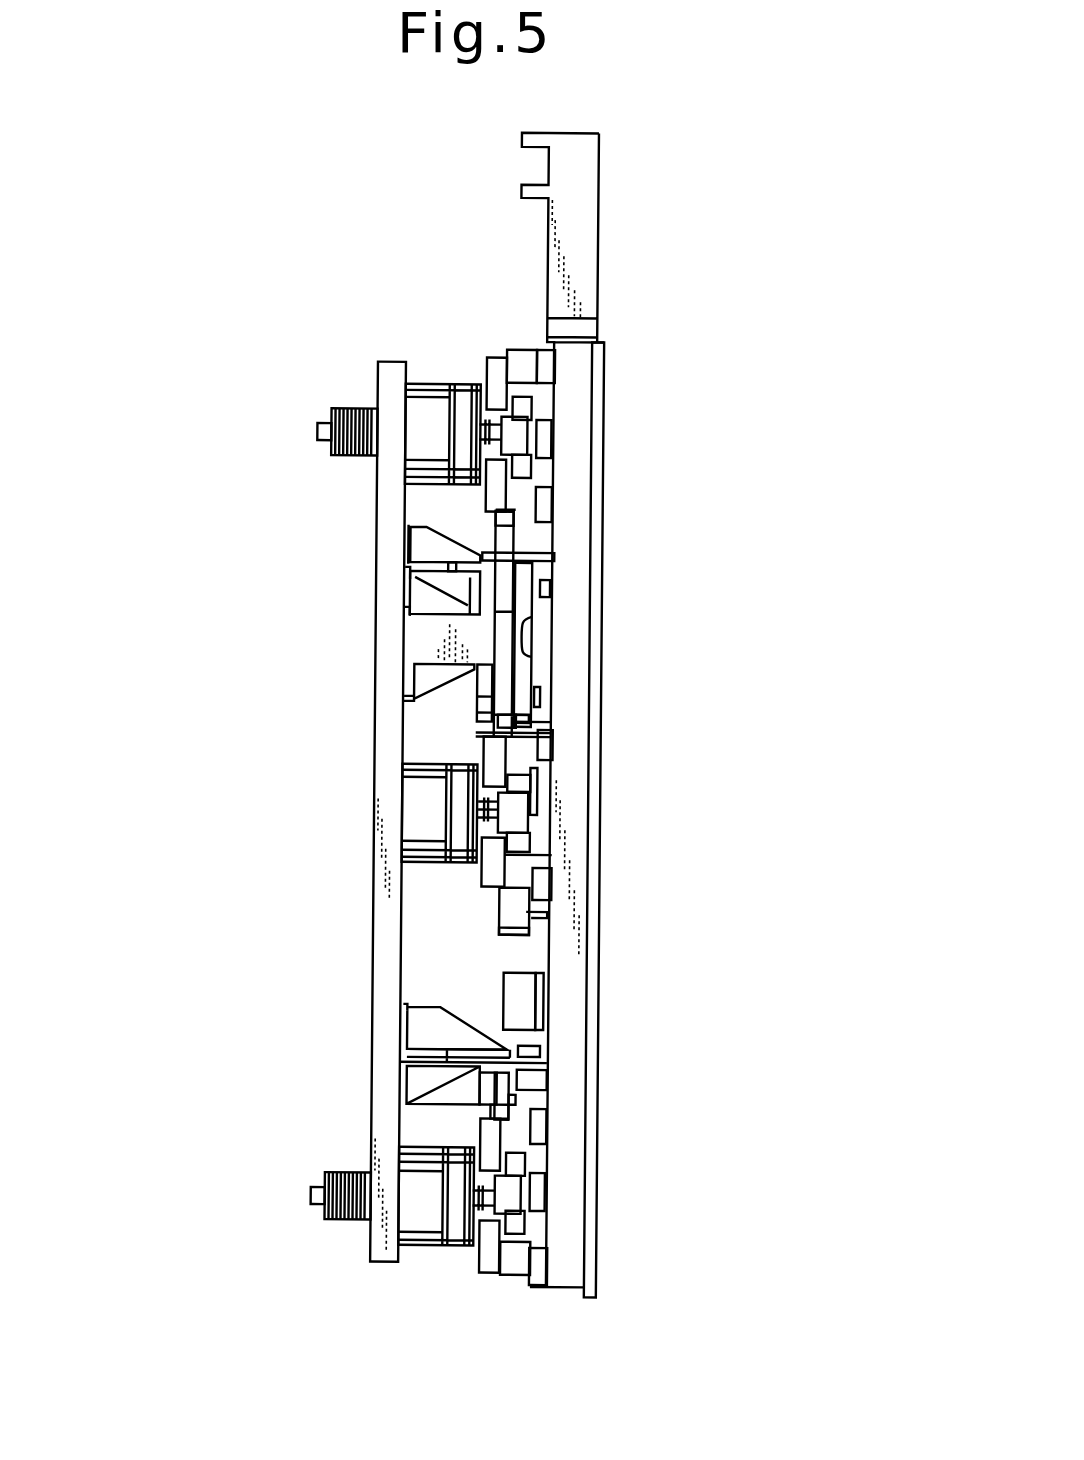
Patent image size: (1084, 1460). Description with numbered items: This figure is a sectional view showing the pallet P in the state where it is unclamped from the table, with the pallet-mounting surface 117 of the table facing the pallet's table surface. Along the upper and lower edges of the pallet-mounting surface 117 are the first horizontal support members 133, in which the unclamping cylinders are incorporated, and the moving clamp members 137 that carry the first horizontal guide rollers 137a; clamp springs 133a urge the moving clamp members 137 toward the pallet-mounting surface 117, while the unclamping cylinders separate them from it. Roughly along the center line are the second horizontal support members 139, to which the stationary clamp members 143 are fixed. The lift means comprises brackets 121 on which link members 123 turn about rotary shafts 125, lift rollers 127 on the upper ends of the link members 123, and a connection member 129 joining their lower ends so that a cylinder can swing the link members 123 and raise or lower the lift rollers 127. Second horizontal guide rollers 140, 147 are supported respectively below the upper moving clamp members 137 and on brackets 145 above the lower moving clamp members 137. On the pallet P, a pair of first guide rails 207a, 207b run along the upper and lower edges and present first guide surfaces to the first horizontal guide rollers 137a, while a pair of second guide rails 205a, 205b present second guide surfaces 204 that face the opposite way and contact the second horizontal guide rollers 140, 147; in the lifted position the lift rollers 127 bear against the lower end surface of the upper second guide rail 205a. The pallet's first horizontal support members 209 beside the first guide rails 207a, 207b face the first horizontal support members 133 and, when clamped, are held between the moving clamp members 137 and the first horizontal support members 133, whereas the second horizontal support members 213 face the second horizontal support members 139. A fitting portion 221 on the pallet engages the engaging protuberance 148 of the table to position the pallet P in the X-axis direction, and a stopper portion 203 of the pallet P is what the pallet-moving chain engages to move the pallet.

The pallet-mounting surface 117 is at (395, 365).
The bracket 121 is at (414, 637).
The link member 123 is at (549, 613).
The rotary shaft 125 is at (546, 652).
The lift roller 127 is at (511, 590).
The connection member 129 is at (478, 673).
The first horizontal support member 133 is at (406, 469).
The clamp spring 133a is at (354, 407).
The moving clamp member 137 is at (531, 407).
The first horizontal guide roller 137a is at (527, 433).
The second horizontal support member 139 is at (479, 757).
The second horizontal guide roller 140 is at (541, 553).
The stationary clamp member 143 is at (528, 842).
The bracket 145 is at (414, 572).
The second horizontal guide roller 147 is at (555, 1072).
The engaging protuberance 148 is at (516, 974).
The stopper portion 203 is at (585, 216).
The second guide surface 204 is at (501, 534).
The second guide rail 205a is at (426, 551).
The second guide rail 205b is at (509, 1110).
The first guide rail 207a is at (547, 438).
The first guide rail 207b is at (526, 1198).
The first horizontal support member 209 is at (501, 358).
The second horizontal support member 213 is at (519, 750).
The fitting portion 221 is at (551, 988).
The pallet P is at (606, 442).